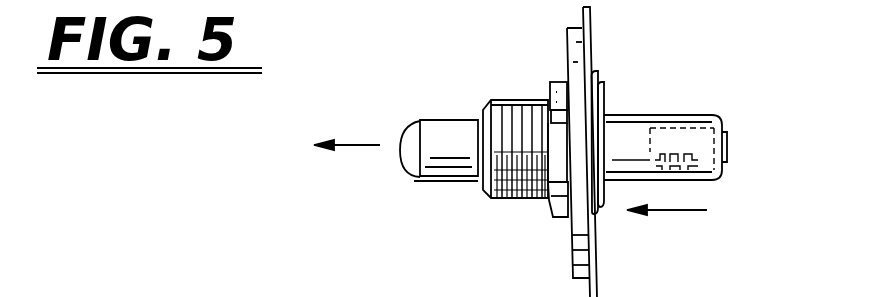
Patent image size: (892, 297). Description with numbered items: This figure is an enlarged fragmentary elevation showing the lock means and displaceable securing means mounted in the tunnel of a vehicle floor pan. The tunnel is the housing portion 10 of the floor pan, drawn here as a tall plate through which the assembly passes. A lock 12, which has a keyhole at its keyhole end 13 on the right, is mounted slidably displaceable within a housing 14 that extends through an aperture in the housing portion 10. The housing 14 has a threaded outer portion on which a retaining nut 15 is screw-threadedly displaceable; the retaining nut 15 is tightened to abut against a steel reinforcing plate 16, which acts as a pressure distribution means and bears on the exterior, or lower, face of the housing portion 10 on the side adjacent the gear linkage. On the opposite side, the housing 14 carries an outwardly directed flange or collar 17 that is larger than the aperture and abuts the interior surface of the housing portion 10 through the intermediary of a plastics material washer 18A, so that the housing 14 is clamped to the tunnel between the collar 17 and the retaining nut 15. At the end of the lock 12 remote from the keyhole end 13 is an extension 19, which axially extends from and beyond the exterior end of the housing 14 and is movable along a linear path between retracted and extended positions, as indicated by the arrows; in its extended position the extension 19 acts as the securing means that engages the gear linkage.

The housing portion 10 is at (587, 44).
The lock 12 is at (668, 103).
The keyhole end 13 is at (728, 148).
The housing 14 is at (503, 110).
The retaining nut 15 is at (561, 206).
The steel reinforcing plate 16 is at (568, 68).
The flange or collar 17 is at (601, 103).
The plastics material washer 18A is at (594, 70).
The extension 19 is at (452, 128).